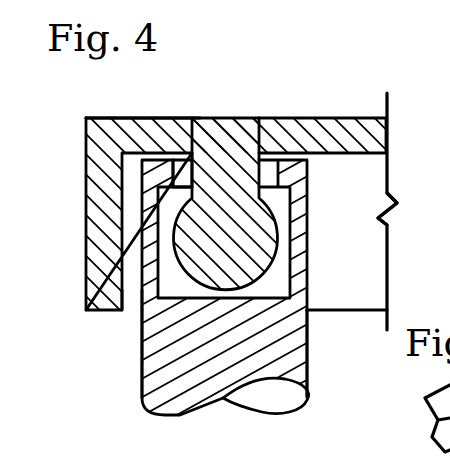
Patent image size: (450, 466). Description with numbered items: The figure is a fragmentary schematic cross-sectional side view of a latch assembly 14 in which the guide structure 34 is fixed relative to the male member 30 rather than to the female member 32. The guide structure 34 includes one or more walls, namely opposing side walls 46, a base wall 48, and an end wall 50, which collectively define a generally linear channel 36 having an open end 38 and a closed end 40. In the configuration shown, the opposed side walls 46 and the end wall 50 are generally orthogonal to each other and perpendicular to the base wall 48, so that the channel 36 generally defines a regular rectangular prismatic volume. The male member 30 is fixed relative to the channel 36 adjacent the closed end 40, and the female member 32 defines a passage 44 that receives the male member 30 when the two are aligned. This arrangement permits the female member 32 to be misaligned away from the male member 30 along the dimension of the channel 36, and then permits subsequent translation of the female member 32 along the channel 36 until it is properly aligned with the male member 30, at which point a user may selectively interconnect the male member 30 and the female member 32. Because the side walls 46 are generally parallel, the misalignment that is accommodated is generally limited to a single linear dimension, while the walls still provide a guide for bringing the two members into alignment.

The latch assembly 14 is at (81, 103).
The male member 30 is at (278, 226).
The female member 32 is at (311, 272).
The guide structure 34 is at (205, 322).
The channel 36 is at (390, 185).
The open end 38 is at (388, 240).
The closed end 40 is at (140, 290).
The passage 44 is at (188, 166).
The opposing side walls 46 is at (324, 311).
The base wall 48 is at (288, 118).
The end wall 50 is at (85, 203).